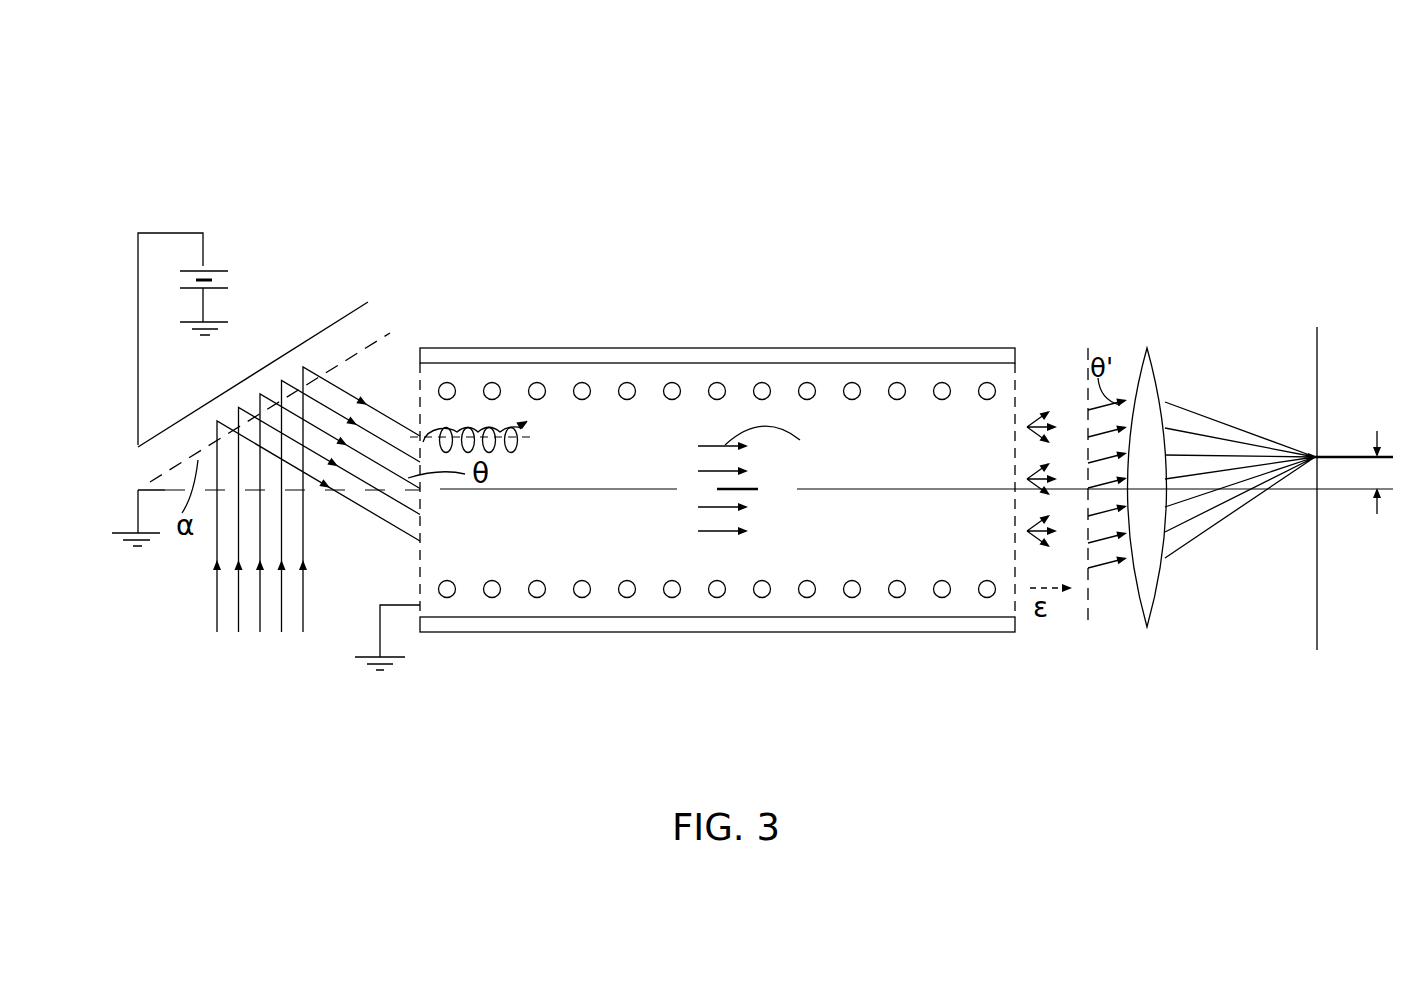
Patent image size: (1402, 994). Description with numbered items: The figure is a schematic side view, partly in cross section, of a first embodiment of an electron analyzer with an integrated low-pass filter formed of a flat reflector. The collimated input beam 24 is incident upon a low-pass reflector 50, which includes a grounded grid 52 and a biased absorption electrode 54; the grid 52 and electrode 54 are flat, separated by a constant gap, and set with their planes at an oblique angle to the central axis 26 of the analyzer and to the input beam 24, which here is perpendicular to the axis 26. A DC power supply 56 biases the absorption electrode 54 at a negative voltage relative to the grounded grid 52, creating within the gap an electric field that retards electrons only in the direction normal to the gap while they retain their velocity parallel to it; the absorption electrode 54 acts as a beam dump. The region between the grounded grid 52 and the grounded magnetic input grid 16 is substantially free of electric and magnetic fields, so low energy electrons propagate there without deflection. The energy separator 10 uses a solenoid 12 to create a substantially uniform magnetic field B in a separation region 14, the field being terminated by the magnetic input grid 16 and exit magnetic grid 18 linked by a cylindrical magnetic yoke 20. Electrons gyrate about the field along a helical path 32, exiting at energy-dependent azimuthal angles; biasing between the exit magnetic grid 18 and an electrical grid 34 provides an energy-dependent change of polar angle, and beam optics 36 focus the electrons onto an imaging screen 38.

The energy separator 10 is at (615, 248).
The solenoid 12 is at (762, 387).
The separation region 14 is at (872, 546).
The magnetic input grid 16 is at (423, 505).
The exit magnetic grid 18 is at (1018, 390).
The cylindrical magnetic yoke 20 is at (675, 348).
The collimated input beam 24 is at (237, 537).
The central axis 26 is at (638, 487).
The helical path 32 is at (477, 423).
The electrical grid 34 is at (1090, 622).
The beam optics 36 is at (1152, 377).
The imaging screen 38 is at (1317, 360).
The low-pass reflector 50 is at (372, 245).
The grounded grid 52 is at (153, 480).
The absorption electrode 54 is at (232, 378).
The DC power supply 56 is at (218, 270).